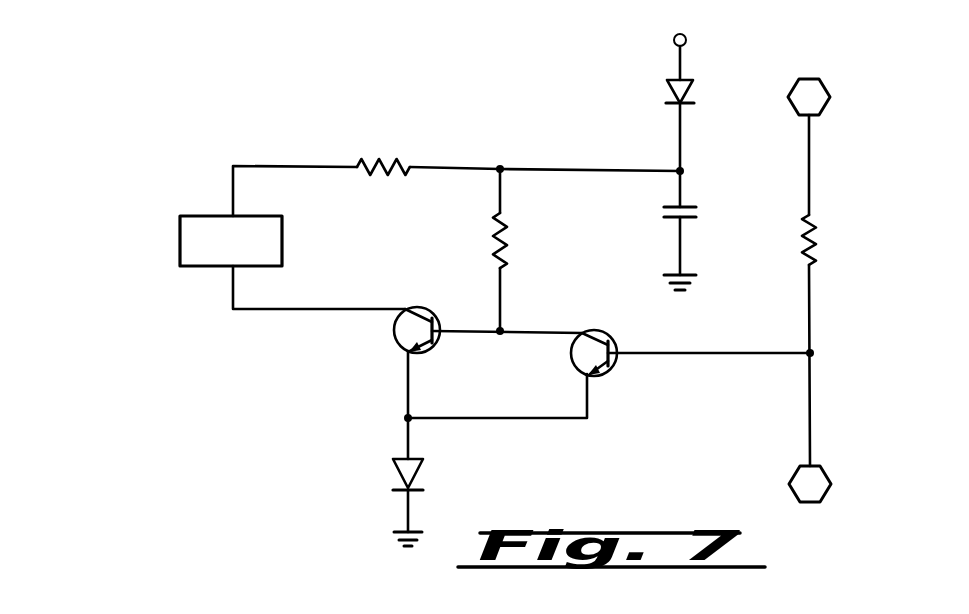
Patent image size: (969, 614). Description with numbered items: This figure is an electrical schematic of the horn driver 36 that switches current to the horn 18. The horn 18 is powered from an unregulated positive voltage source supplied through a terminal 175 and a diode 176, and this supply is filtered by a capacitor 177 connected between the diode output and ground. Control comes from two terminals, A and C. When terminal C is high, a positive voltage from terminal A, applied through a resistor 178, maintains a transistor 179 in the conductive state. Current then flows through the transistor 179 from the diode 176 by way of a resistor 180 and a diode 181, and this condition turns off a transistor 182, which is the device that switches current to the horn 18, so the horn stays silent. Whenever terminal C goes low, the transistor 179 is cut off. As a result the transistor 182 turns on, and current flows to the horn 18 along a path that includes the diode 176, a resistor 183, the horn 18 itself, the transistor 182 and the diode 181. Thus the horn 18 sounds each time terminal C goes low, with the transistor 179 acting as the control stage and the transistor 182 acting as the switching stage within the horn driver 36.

The horn 18 is at (178, 246).
The horn driver 36 is at (364, 371).
The terminal 175 is at (672, 41).
The diode 176 is at (667, 88).
The capacitor 177 is at (698, 212).
The resistor 178 is at (818, 237).
The transistor 179 is at (594, 330).
The resistor 180 is at (507, 237).
The diode 181 is at (394, 475).
The transistor 182 is at (419, 308).
The resistor 183 is at (387, 176).